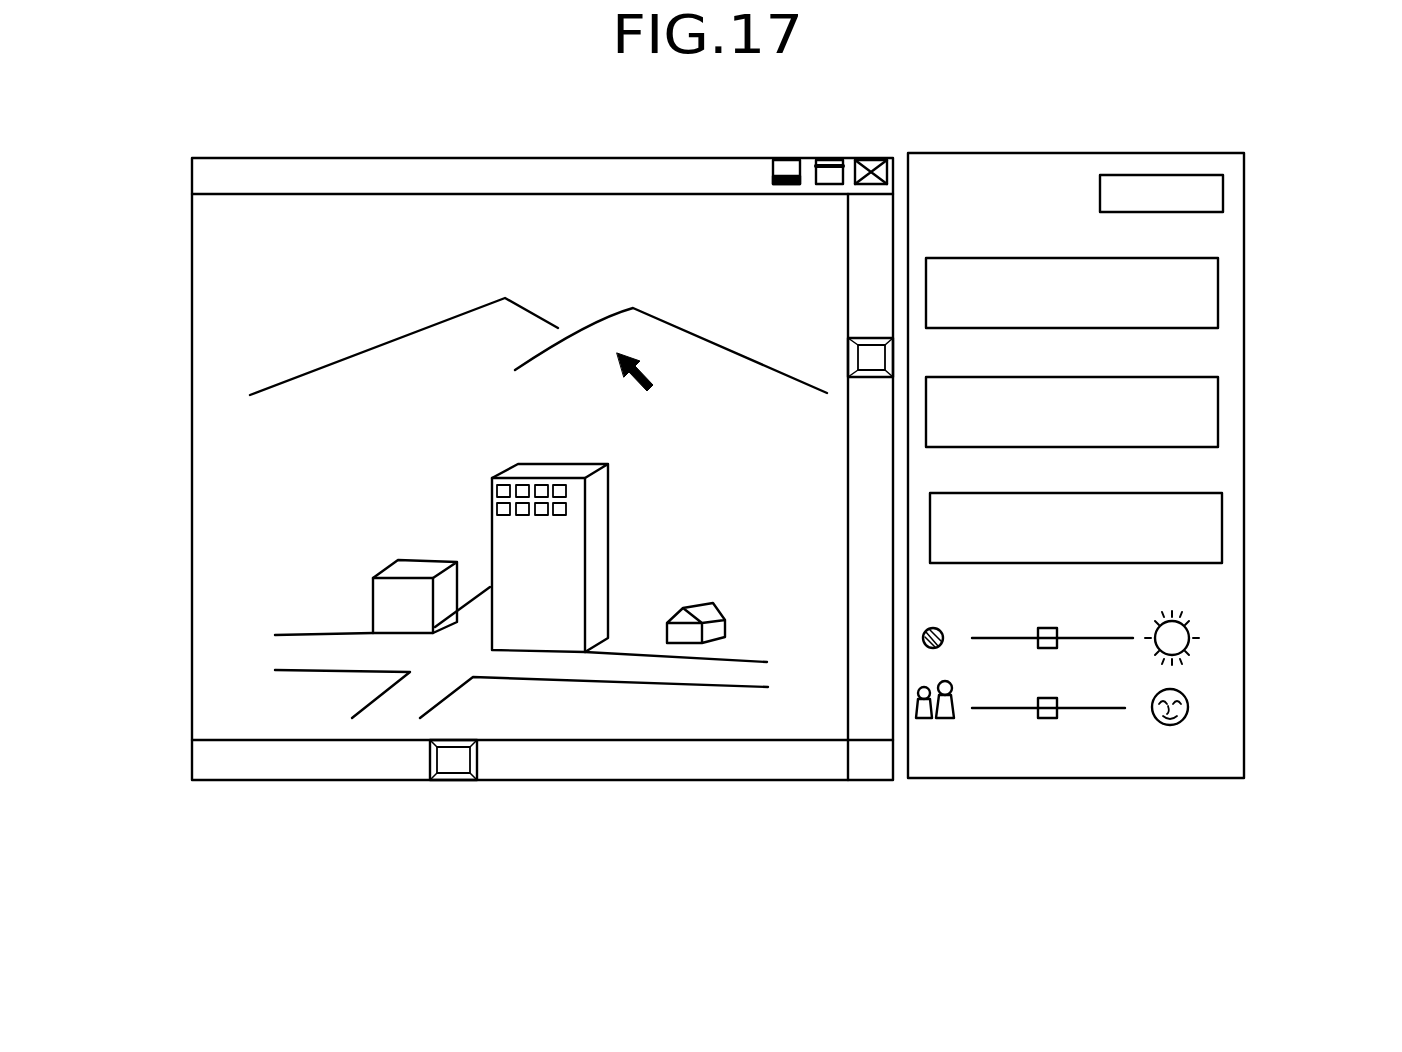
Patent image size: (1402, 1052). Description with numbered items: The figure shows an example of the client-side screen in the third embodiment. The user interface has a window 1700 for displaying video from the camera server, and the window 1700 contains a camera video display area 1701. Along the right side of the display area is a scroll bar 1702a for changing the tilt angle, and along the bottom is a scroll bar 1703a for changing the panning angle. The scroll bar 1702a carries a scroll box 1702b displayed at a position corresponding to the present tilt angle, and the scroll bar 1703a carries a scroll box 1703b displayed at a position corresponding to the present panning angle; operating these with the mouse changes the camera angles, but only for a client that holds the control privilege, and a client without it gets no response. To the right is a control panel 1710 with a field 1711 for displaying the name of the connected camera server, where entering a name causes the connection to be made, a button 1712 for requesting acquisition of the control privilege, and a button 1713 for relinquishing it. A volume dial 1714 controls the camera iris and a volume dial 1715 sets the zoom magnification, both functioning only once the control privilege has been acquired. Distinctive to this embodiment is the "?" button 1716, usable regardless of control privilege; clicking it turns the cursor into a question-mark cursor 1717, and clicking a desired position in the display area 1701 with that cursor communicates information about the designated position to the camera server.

The window 1700 is at (712, 158).
The camera video display area 1701 is at (316, 170).
The scroll bar for changing tilt angle 1702a is at (870, 580).
The scroll box 1702b is at (870, 340).
The scroll bar for changing panning angle 1703a is at (337, 770).
The scroll box 1703b is at (457, 767).
The control panel 1710 is at (1120, 153).
The field for displaying the name of the connected camera server 1711 is at (1215, 193).
The button for requesting acquisition of the control privilege 1712 is at (1213, 296).
The button for relinquishing the control privilege 1713 is at (1215, 400).
The volume dial 1714 is at (1207, 632).
The volume dial 1715 is at (1207, 707).
The "?" button 1716 is at (1215, 530).
The question-mark cursor 1717 is at (632, 350).